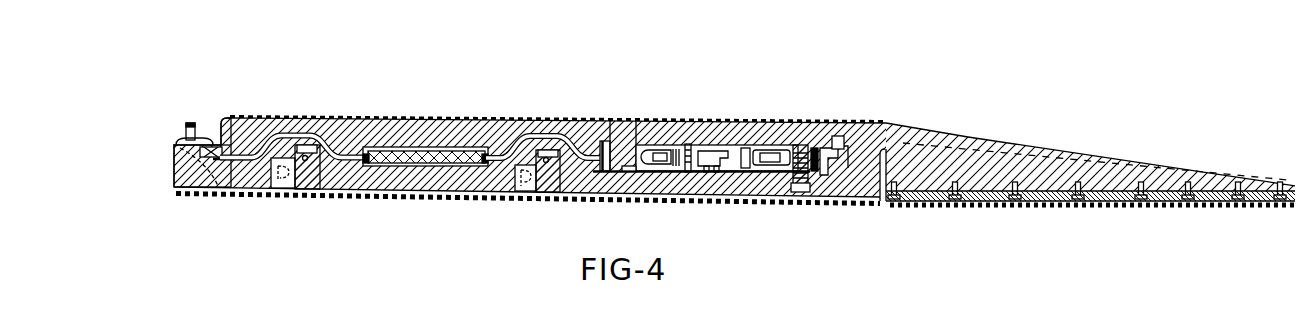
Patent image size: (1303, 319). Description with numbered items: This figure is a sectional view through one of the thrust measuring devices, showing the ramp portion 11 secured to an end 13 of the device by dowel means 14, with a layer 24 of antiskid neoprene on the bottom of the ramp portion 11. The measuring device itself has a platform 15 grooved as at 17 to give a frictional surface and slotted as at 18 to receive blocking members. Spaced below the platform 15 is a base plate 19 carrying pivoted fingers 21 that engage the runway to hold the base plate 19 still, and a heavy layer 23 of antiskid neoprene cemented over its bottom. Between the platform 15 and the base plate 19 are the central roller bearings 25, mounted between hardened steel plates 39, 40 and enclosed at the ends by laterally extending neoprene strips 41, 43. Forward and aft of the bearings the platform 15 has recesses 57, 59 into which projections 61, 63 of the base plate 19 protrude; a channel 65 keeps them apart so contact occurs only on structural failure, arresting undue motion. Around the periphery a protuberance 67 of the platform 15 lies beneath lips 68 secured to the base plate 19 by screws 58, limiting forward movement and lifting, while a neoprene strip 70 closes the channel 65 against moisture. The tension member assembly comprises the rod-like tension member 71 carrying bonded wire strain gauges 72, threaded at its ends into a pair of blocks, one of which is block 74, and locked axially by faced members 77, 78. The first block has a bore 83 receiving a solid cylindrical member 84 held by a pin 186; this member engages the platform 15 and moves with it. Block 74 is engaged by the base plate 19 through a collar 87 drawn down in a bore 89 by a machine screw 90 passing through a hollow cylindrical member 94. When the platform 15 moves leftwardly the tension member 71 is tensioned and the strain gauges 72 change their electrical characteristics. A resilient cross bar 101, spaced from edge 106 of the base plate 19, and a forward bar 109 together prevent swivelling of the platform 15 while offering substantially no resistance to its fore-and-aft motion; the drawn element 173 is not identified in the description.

The ramp portion 11 is at (1115, 156).
The end of the device 13 is at (803, 110).
The dowel means 14 is at (178, 118).
The platform 15 is at (250, 127).
The grooves 17 is at (516, 127).
The slots 18 is at (450, 142).
The base plate 19 is at (208, 185).
The pivoted fingers 21 is at (297, 184).
The layer of antiskid neoprene 23 is at (273, 182).
The antiskid layer 24 is at (1020, 195).
The roller bearings 25 is at (395, 140).
The hardened steel plate 39 is at (420, 142).
The hardened steel plate 40 is at (435, 183).
The neoprene strip 41 is at (362, 139).
The neoprene strip 43 is at (478, 139).
The recess 57 is at (290, 108).
The screws 58 is at (200, 137).
The recess 59 is at (548, 127).
The projection 61 is at (322, 128).
The projection 63 is at (506, 184).
The channel 65 is at (338, 184).
The protuberance 67 is at (220, 118).
The lips 68 is at (168, 160).
The neoprene strip 70 is at (228, 183).
The tension member 71 is at (706, 160).
The bonded wire strain gauges 72 is at (737, 140).
The block 74 is at (748, 158).
The faced member 77 is at (646, 158).
The faced member 78 is at (763, 141).
The bore 83 is at (596, 166).
The solid cylindrical member 84 is at (621, 130).
The collar 87 is at (798, 137).
The bore 89 is at (836, 139).
The machine screw 90 is at (792, 190).
The hollow cylindrical member 94 is at (778, 186).
The resilient cross bar 101 is at (846, 128).
The edge of the base plate 106 is at (826, 189).
The bar 109 is at (178, 184).
The tab 173 is at (622, 164).
The pin 186 is at (604, 188).